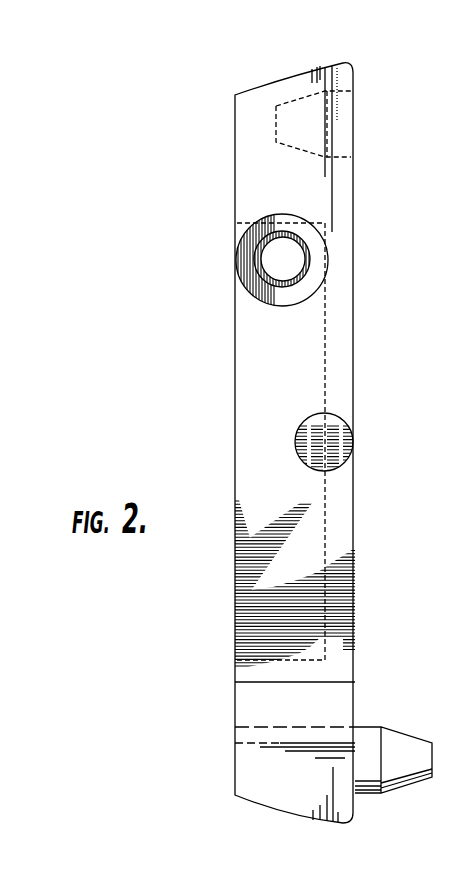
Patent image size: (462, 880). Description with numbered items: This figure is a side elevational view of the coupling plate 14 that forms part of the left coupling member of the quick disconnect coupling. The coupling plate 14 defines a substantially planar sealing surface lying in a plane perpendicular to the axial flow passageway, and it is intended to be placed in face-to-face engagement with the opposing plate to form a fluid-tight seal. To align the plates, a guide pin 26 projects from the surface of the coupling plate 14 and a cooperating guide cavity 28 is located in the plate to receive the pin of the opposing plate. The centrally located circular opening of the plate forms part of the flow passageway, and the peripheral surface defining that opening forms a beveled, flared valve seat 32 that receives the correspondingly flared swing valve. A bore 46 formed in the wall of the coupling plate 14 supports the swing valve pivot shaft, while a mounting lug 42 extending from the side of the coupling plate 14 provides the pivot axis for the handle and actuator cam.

The coupling plate 14 is at (280, 75).
The guide cavity 28 is at (345, 95).
The valve seat 32 is at (329, 276).
The bore 46 is at (282, 255).
The mounting lug 42 is at (330, 442).
The guide pin 26 is at (397, 748).